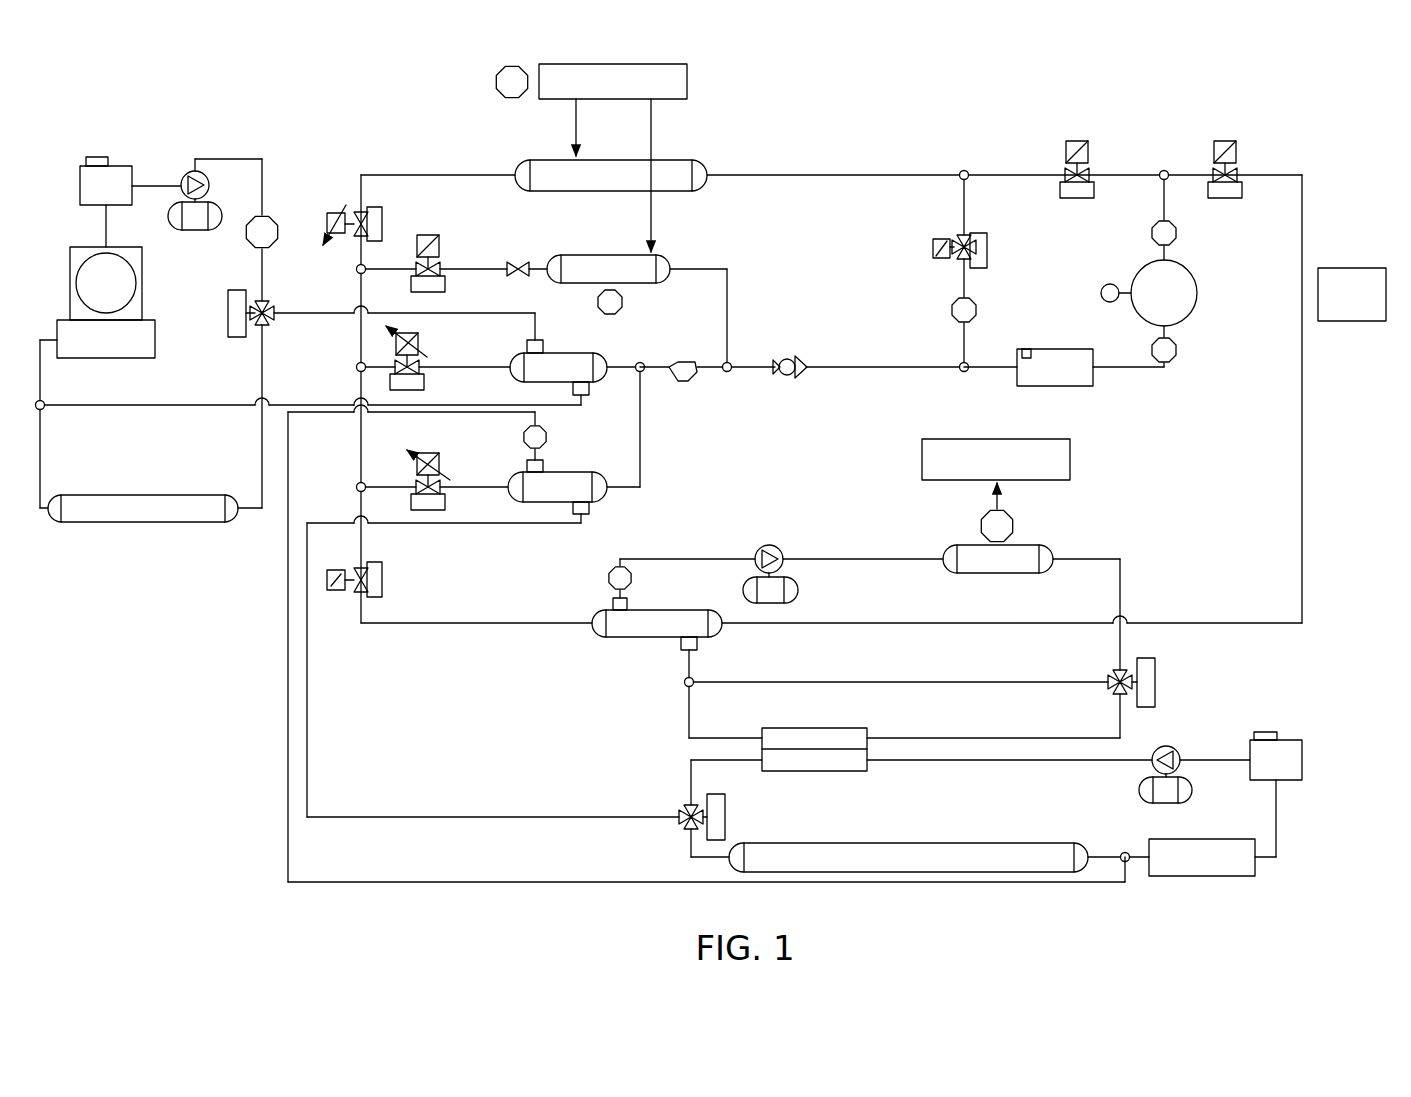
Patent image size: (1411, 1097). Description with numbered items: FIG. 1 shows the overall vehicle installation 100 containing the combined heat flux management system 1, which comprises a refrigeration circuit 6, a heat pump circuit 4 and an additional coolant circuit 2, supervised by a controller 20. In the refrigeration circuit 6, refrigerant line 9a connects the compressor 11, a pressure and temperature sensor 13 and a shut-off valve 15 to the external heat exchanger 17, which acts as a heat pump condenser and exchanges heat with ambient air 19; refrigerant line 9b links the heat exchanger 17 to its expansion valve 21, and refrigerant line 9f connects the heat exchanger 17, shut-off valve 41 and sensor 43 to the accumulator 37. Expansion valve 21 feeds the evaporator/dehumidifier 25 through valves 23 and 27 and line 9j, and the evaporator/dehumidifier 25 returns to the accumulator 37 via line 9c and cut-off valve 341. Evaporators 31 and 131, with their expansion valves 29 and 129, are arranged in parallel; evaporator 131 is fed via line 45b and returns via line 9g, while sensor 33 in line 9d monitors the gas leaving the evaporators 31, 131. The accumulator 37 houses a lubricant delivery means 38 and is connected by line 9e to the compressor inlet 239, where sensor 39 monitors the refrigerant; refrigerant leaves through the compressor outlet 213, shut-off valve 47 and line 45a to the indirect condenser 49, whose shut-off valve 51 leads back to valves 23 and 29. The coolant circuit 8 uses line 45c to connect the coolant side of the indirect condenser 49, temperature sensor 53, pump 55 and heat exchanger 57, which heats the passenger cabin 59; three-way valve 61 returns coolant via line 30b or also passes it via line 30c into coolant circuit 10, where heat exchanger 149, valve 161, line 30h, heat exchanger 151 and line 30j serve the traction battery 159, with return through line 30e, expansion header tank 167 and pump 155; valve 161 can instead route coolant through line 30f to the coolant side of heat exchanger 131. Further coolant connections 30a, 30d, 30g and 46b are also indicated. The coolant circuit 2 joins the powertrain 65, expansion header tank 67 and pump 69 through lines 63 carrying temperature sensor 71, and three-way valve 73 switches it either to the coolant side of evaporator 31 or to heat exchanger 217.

The thermal management system 100 is at (957, 98).
The combined heat flux management system 1 is at (1302, 150).
The additional coolant circuit 2 is at (56, 272).
The heat pump circuit 4 is at (1312, 583).
The refrigeration circuit 6 is at (796, 155).
The coolant circuit 8 is at (1122, 540).
The coolant circuit 10 is at (1288, 857).
The compressor 11 is at (1151, 305).
The pressure and temperature sensor 13 is at (495, 82).
The shut-off valve 15 is at (1060, 187).
The external air-refrigerant heat exchanger 17 is at (608, 160).
The ambient air 19 is at (600, 94).
The controller 20 is at (1339, 312).
The expansion valve 21 is at (375, 207).
The shut-off valve 23 is at (446, 285).
The evaporator/dehumidifier 25 is at (602, 255).
The valve 27 is at (516, 262).
The expansion valve 29 is at (424, 383).
The evaporator 31 is at (580, 353).
The pressure and temperature sensor 33 is at (683, 381).
The accumulator 37 is at (1042, 379).
The lubricant delivery means 38 is at (1024, 349).
The temperature and pressure sensor 39 is at (1178, 352).
The shut off valve 41 is at (987, 252).
The temperature and pressure sensor 43 is at (951, 310).
The refrigerant line 45a is at (1315, 432).
The refrigerant line 45b is at (356, 340).
The coolant line 45c is at (845, 550).
The coolant line 46b is at (1285, 826).
The shut off valve 47 is at (1242, 190).
The indirect condenser 49 is at (660, 640).
The shut off valve 51 is at (382, 583).
The temperature sensor 53 is at (608, 578).
The pump 55 is at (798, 594).
The internal coolant to air heat exchanger 57 is at (998, 574).
The passenger cabin 59 is at (983, 471).
The three-way valve 61 is at (1156, 685).
The coolant lines 63 is at (228, 158).
The powertrain 65 is at (93, 352).
The expansion header tank 67 is at (93, 198).
The pump 69 is at (195, 232).
The temperature sensor 71 is at (275, 215).
The three way valve 73 is at (228, 313).
The expansion valve 129 is at (428, 510).
The evaporator 131 is at (573, 472).
The heat exchanger 149 is at (815, 728).
The further heat exchanger 151 is at (912, 843).
The pump 155 is at (1140, 790).
The traction battery 159 is at (1183, 870).
The three-way valve 161 is at (725, 812).
The expansion header tank 167 is at (1257, 772).
The compressor outlet 213 is at (1172, 256).
The heat exchanger 217 is at (145, 522).
The compressor inlet 239 is at (1172, 330).
The cut off valve 341 is at (790, 379).
The refrigerant line 9a is at (1107, 168).
The second refrigerant line 9b is at (463, 166).
The refrigerant line 9c is at (737, 305).
The refrigerant line 9d is at (626, 356).
The refrigerant line 9e is at (1126, 392).
The further refrigerant line 9f is at (953, 340).
The refrigerant line 9g is at (652, 464).
The refrigerant line 9j is at (462, 262).
The coolant line 30a is at (1132, 597).
The coolant line 30b is at (909, 672).
The coolant line 30c is at (937, 726).
The coolant line 30d is at (685, 716).
The coolant line 30e is at (685, 782).
The coolant line 30f is at (332, 752).
The coolant line 30g is at (275, 780).
The coolant line 30h is at (685, 840).
The coolant line 30j is at (1128, 850).